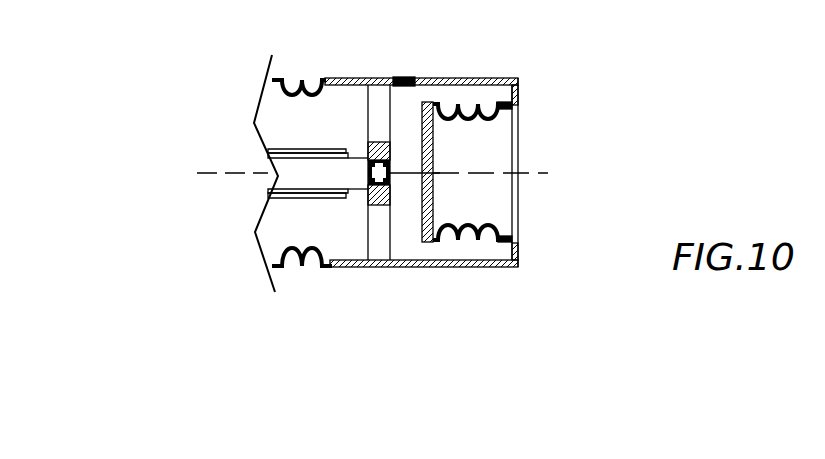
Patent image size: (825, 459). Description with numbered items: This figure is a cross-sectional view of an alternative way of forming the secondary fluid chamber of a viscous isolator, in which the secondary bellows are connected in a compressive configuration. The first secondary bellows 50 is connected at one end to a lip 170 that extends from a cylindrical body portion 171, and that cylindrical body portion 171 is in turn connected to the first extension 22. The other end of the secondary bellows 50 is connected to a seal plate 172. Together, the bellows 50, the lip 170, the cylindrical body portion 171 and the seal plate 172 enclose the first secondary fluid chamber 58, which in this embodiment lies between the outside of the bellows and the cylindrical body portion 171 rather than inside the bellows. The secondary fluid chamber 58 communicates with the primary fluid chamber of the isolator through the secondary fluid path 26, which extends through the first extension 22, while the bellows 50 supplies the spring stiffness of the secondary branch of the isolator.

The first extension 22 is at (355, 268).
The secondary fluid path 26 is at (380, 223).
The first secondary bellows 50 is at (497, 118).
The first secondary fluid chamber 58 is at (477, 250).
The lip 170 is at (518, 100).
The cylindrical body portion 171 is at (415, 78).
The seal plate 172 is at (433, 190).